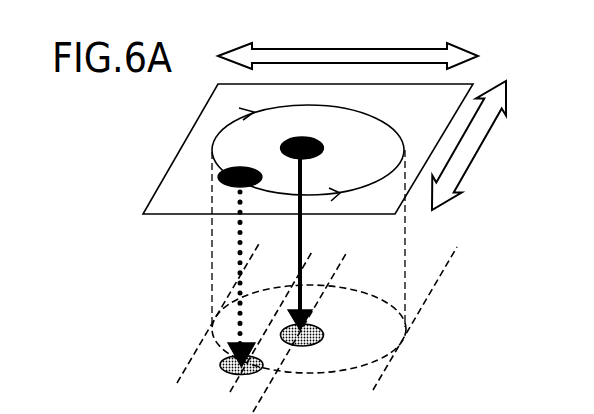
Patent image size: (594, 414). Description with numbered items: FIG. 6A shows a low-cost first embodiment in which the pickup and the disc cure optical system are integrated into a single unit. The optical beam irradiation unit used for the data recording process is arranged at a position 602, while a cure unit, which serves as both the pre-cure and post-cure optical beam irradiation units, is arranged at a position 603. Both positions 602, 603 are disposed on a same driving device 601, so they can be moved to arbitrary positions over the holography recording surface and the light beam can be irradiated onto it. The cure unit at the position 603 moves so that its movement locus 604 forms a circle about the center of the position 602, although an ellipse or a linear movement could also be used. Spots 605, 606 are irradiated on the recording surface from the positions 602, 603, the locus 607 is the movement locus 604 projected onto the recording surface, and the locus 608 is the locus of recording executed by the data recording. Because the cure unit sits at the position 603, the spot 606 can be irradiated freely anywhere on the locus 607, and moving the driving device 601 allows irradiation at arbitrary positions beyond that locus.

The driving device 601 is at (180, 214).
The position of the data recording optical beam irradiation unit 602 is at (323, 149).
The position of the cure unit 603 is at (240, 167).
The movement locus 604 is at (380, 120).
The spot irradiated from position 602 605 is at (323, 337).
The spot irradiated from position 603 606 is at (222, 362).
The projected movement locus 607 is at (406, 301).
The locus of recording 608 is at (343, 262).